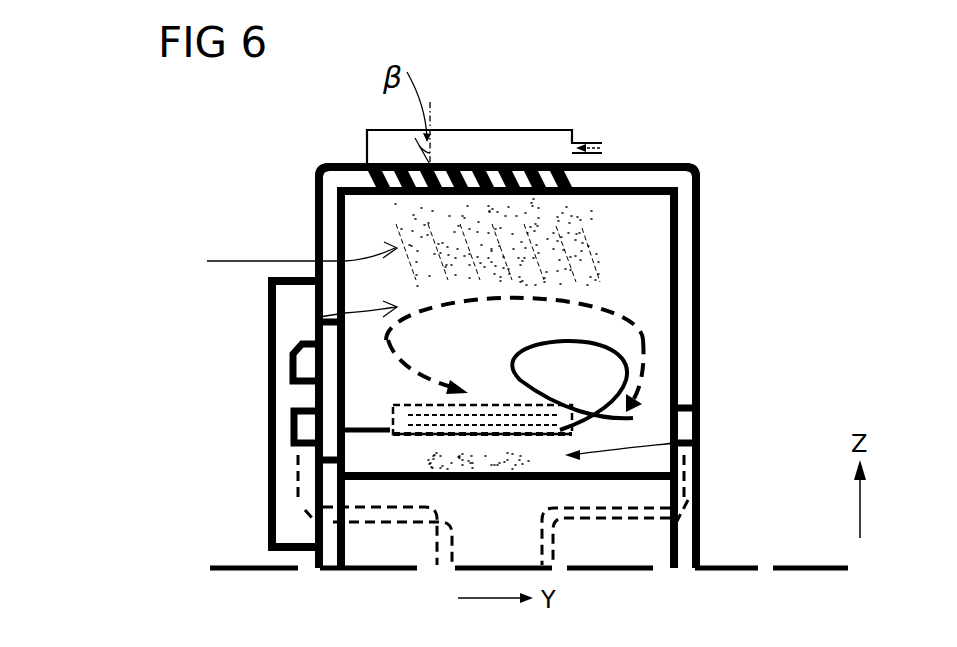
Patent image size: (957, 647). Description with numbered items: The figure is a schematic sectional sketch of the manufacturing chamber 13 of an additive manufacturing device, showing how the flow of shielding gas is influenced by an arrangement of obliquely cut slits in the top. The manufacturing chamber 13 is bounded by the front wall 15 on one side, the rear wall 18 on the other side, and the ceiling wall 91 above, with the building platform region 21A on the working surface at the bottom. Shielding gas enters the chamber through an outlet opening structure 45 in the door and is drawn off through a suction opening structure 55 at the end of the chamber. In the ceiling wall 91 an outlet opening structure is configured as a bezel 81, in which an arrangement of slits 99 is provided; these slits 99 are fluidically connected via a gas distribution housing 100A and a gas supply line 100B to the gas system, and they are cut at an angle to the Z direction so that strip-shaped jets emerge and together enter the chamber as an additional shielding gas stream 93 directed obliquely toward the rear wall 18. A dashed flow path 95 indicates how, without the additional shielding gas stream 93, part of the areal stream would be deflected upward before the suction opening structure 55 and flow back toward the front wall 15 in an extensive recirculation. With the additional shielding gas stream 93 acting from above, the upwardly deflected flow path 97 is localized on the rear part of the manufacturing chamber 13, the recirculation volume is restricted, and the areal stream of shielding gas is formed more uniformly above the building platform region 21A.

The manufacturing chamber 13 is at (319, 317).
The front wall 15 is at (315, 225).
The rear wall 18 is at (703, 365).
The building platform region 21A is at (700, 440).
The outlet opening structure 45 is at (303, 425).
The suction opening structure 55 is at (687, 403).
The bezel 81 is at (365, 183).
The ceiling wall 91 is at (653, 193).
The additional shielding gas stream 93 is at (207, 261).
The flow path 95 is at (638, 348).
The upwardly deflected flow path 97 is at (607, 345).
The slits 99 is at (585, 245).
The gas distribution housing 100A is at (477, 130).
The gas supply line 100B is at (590, 143).